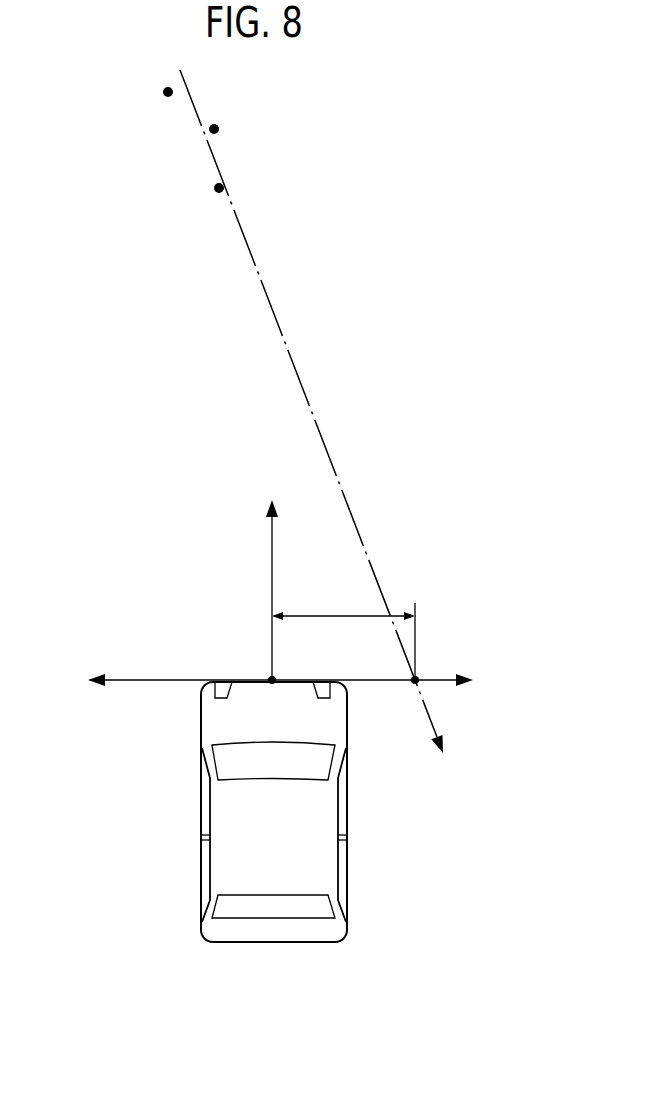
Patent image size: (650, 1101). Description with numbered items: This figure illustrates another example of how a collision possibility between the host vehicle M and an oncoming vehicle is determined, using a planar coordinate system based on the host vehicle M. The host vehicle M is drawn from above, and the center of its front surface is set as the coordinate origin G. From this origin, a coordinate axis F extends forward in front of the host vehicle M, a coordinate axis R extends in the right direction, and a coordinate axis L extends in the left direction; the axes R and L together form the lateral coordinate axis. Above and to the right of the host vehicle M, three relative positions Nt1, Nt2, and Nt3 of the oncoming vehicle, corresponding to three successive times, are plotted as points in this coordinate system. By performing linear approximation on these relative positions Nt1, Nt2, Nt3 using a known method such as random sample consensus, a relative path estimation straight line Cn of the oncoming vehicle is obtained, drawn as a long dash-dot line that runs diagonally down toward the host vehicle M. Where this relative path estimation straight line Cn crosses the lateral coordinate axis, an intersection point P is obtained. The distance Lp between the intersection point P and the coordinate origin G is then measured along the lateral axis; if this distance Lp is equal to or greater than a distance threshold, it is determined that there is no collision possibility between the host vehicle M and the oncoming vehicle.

The relative path estimation straight line Cn is at (268, 300).
The relative position of oncoming vehicle at time t1 Nt1 is at (168, 92).
The relative position of oncoming vehicle at time t2 Nt2 is at (218, 130).
The relative position of oncoming vehicle at time t3 Nt3 is at (219, 188).
The coordinate axis extending in front of host vehicle F is at (271, 573).
The coordinate axis extending in left direction L is at (169, 680).
The coordinate axis extending in right direction R is at (386, 680).
The distance between intersection point and coordinate origin Lp is at (346, 615).
The coordinate origin G is at (272, 680).
The intersection point P is at (415, 680).
The host vehicle M is at (200, 812).